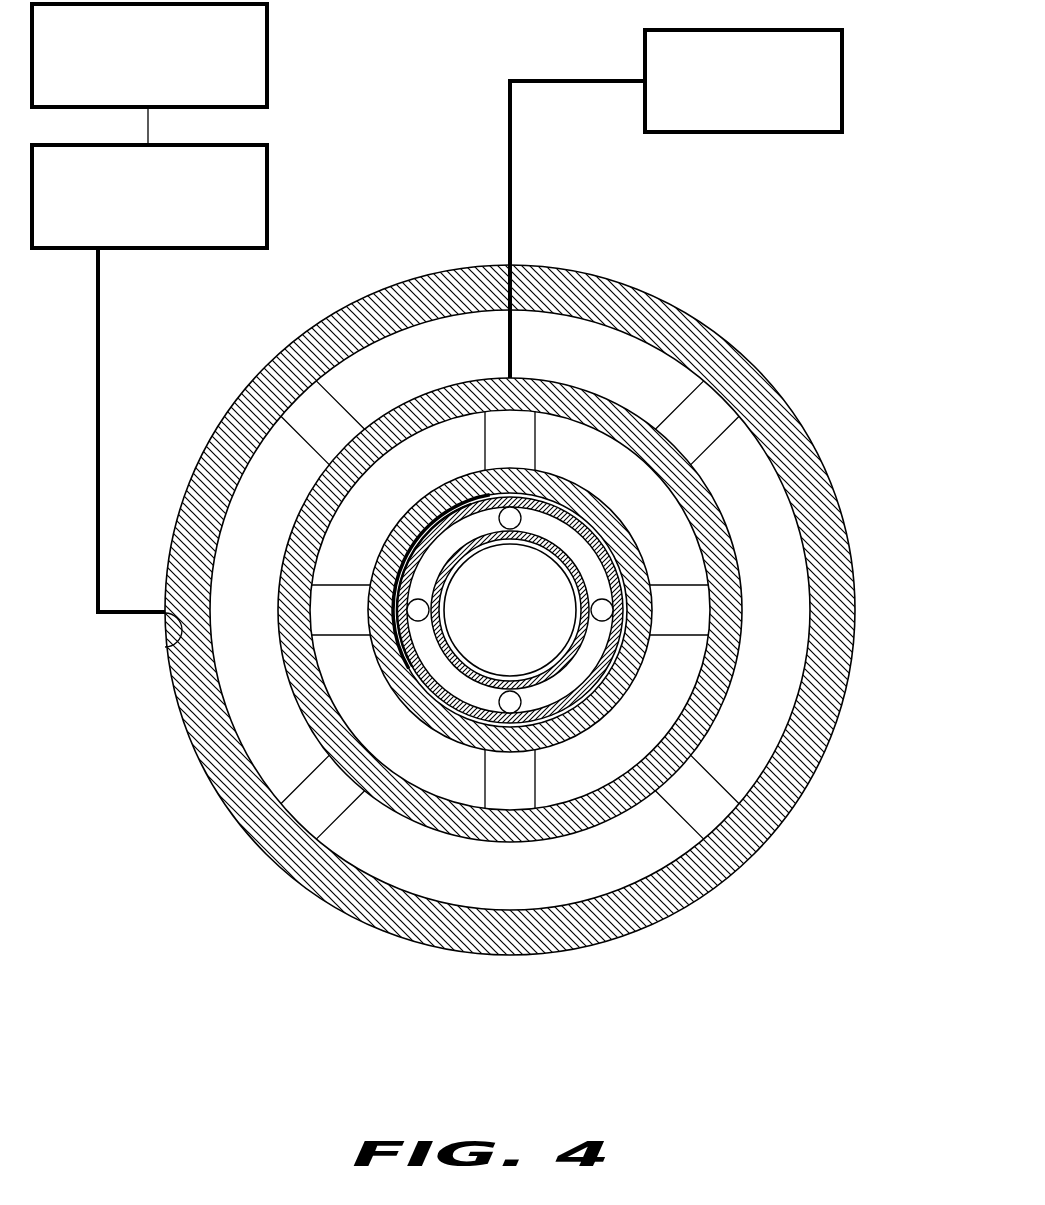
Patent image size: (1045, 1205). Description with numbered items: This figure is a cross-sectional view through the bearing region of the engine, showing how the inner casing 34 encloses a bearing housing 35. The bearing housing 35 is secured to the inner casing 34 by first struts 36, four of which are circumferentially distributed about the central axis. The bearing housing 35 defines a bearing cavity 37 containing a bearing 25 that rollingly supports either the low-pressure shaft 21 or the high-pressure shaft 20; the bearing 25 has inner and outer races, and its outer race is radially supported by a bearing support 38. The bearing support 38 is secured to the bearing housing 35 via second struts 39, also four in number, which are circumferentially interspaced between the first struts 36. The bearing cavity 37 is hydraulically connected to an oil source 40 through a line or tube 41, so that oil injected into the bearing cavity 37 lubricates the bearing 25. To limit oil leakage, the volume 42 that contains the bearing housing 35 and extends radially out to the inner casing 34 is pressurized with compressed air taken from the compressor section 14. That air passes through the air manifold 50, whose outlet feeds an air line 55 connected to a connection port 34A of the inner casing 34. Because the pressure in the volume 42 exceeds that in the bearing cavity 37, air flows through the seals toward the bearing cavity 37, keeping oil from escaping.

The compressor section 14 is at (267, 57).
The air manifold 50 is at (267, 197).
The air line 55 is at (100, 318).
The oil source 40 is at (742, 132).
The line or tube 41 is at (512, 192).
The inner casing 34 is at (855, 612).
The connection port 34A is at (167, 648).
The volume 42 is at (428, 349).
The bearing housing 35 is at (383, 808).
The first struts 36 is at (697, 427).
The bearing cavity 37 is at (661, 705).
The second struts 39 is at (508, 787).
The bearing support 38 is at (403, 710).
The bearing 25 is at (588, 551).
The high-pressure shaft 20 is at (511, 610).
The low-pressure shaft 21 is at (578, 612).